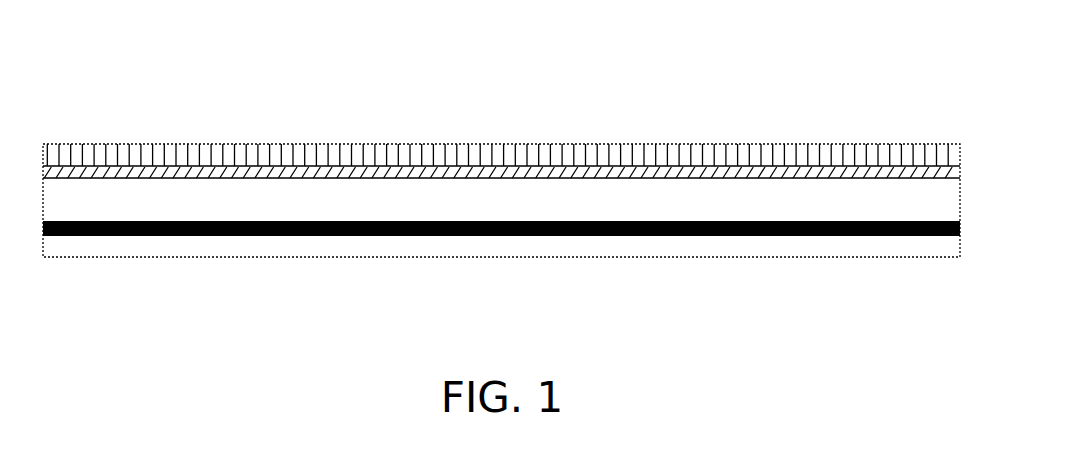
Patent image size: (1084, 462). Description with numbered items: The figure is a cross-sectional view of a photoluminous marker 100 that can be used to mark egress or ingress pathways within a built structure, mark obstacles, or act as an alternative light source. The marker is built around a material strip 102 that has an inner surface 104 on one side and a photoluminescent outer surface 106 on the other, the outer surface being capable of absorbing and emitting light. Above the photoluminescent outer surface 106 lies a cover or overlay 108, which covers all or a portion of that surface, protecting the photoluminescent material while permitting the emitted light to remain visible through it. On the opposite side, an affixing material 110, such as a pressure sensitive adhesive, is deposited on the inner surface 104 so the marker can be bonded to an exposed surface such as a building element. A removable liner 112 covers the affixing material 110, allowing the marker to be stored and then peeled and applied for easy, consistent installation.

The photoluminous marker 100 is at (285, 69).
The material strip 102 is at (707, 202).
The inner surface 104 is at (243, 224).
The photoluminescent outer surface 106 is at (548, 173).
The overlay 108 is at (318, 156).
The affixing material 110 is at (383, 231).
The removable liner 112 is at (558, 246).